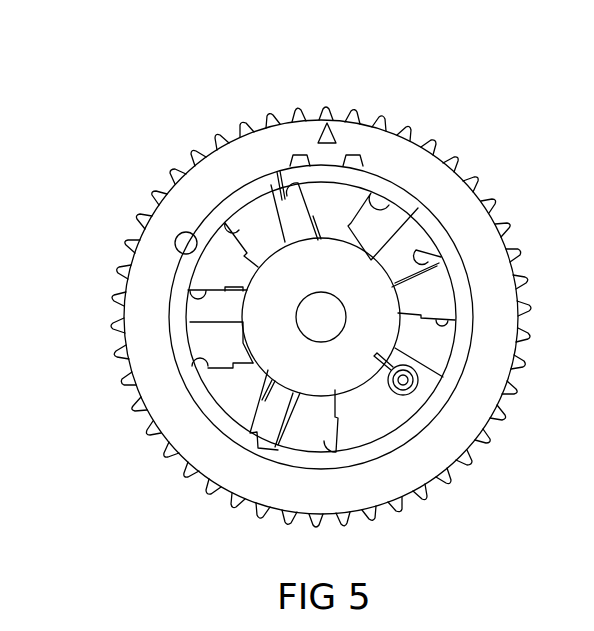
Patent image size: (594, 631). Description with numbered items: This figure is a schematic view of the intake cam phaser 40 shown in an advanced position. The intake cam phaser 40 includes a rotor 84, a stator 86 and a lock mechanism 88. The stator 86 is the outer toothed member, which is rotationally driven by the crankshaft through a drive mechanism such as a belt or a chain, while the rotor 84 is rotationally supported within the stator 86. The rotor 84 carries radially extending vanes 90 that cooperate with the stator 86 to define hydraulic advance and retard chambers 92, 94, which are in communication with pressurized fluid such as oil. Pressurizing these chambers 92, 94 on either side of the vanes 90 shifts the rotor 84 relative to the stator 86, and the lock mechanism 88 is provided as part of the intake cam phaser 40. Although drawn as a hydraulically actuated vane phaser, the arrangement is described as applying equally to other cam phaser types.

The intake cam phaser 40 is at (148, 110).
The rotor 84 is at (432, 170).
The stator 86 is at (341, 118).
The lock mechanism 88 is at (413, 384).
The vanes 90 is at (292, 182).
The advance chamber 92 is at (225, 222).
The retard chamber 94 is at (272, 176).